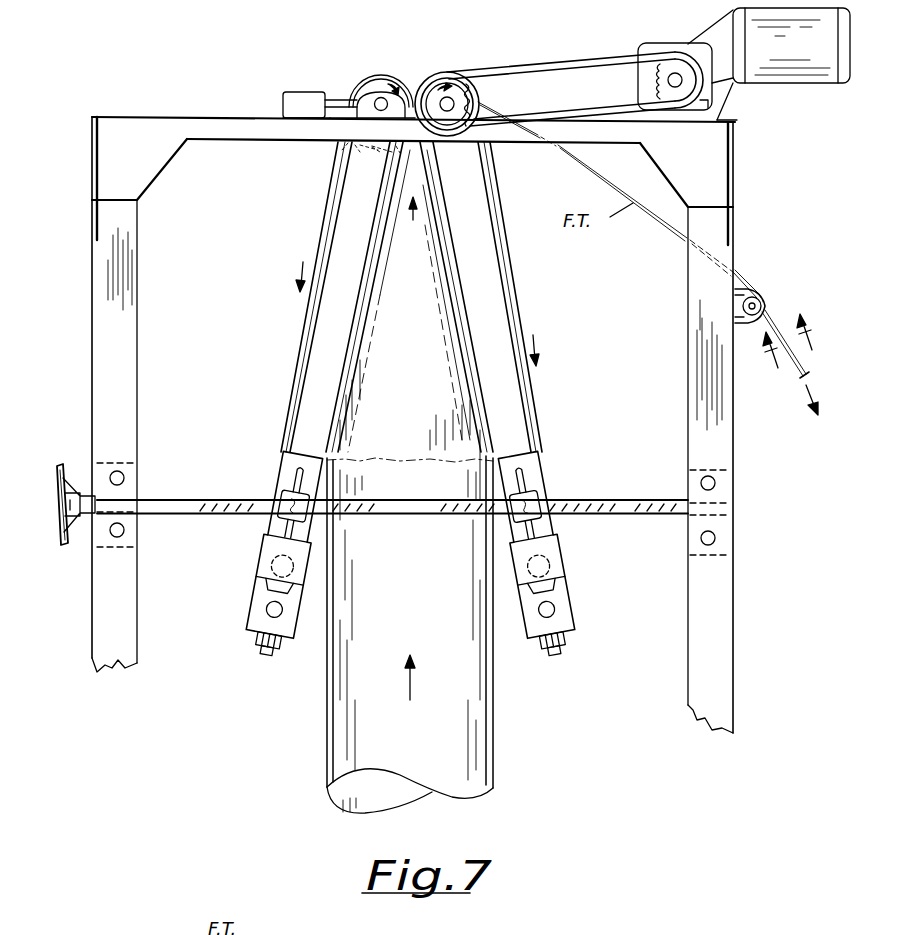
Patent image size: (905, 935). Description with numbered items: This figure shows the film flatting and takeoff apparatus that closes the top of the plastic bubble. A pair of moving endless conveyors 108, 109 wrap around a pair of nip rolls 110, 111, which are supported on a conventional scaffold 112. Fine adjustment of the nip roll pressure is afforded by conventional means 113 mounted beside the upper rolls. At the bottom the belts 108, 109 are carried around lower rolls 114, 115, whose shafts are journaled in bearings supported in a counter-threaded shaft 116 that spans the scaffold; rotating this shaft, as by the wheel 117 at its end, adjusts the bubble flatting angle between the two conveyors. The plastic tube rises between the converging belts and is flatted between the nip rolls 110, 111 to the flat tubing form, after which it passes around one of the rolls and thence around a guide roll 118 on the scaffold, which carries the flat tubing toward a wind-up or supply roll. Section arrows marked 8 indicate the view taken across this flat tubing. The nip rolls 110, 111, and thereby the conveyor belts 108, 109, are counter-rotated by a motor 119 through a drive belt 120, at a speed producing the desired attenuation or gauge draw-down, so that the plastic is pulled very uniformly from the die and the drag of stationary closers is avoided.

The section line 8- 8 is at (796, 364).
The moving conveyor 108 is at (303, 338).
The moving conveyor 109 is at (532, 408).
The nip roll 110 is at (378, 80).
The nip roll 111 is at (447, 70).
The scaffold 112 is at (233, 133).
The nip roll pressure adjustment means 113 is at (312, 79).
The roll 114 is at (266, 566).
The roll 115 is at (556, 567).
The counter-threaded shaft 116 is at (188, 492).
The wheel 117 is at (64, 542).
The guide roll 118 is at (762, 294).
The motor 119 is at (827, 80).
The belt 120 is at (585, 71).